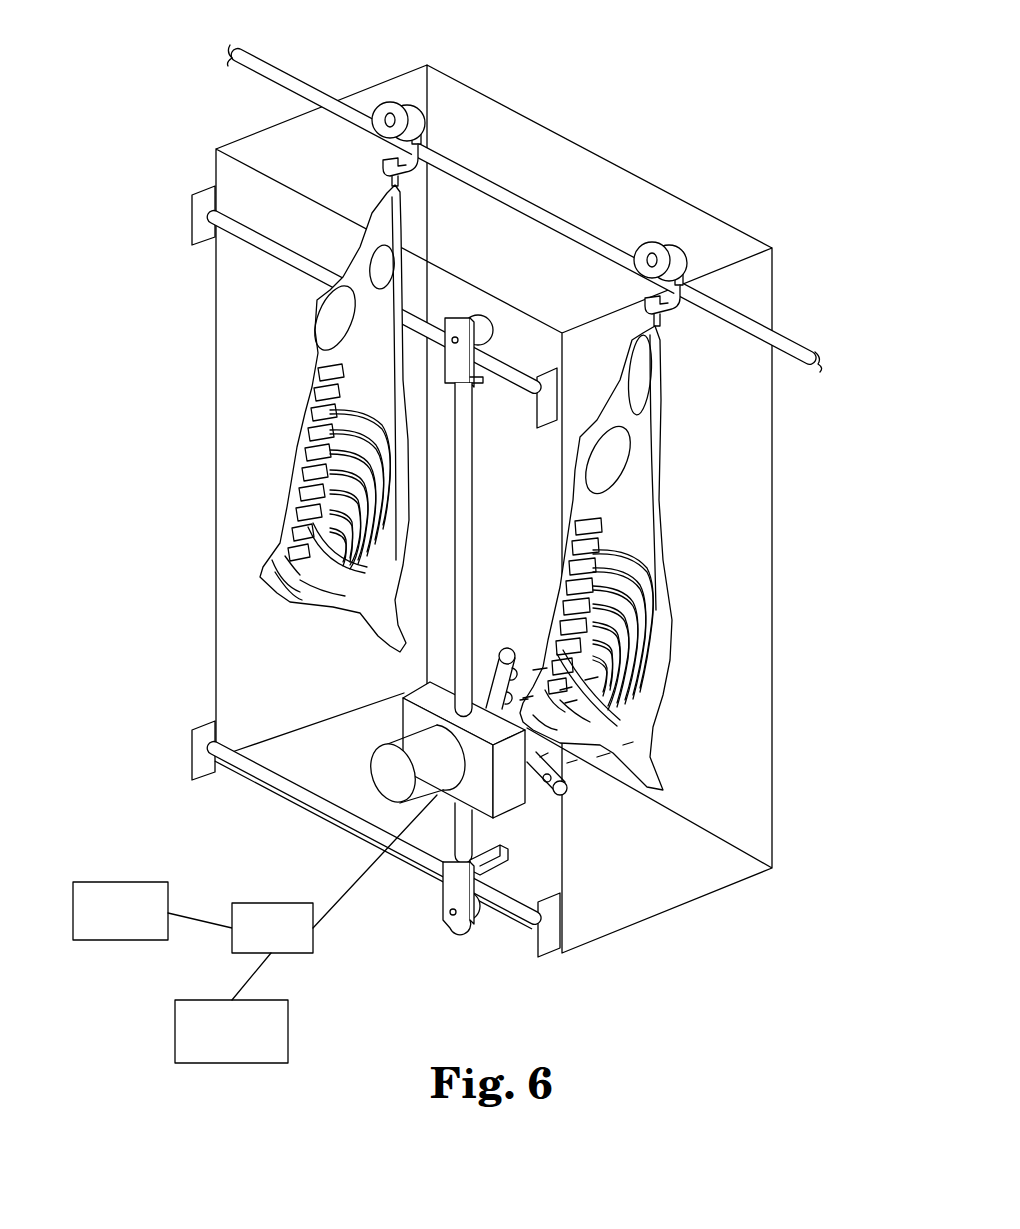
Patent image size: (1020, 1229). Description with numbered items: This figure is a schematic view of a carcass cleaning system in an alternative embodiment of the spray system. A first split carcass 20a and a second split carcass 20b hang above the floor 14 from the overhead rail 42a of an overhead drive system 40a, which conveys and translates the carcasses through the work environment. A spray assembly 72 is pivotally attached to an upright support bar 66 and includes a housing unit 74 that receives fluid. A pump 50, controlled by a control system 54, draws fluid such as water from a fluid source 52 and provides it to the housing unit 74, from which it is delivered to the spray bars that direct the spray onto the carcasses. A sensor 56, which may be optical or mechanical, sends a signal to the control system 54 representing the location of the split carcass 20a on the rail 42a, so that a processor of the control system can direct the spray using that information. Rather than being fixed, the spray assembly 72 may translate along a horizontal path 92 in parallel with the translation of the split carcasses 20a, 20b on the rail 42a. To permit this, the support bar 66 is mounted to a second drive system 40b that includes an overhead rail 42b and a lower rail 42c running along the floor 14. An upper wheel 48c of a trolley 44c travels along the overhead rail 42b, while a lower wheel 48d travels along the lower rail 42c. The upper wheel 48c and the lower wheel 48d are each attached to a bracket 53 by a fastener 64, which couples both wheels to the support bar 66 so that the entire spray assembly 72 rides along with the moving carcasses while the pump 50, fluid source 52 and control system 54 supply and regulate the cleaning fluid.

The floor 14 is at (646, 895).
The split carcass 20a is at (675, 510).
The split carcass 20b is at (428, 448).
The overhead drive system 40a is at (351, 76).
The drive system 40b is at (260, 276).
The overhead rail 42a is at (258, 58).
The overhead rail 42b is at (245, 232).
The lower rail 42c is at (265, 788).
The trolley 44c is at (453, 300).
The upper wheel 48c is at (485, 312).
The lower wheel 48d is at (471, 931).
The pump 50 is at (292, 954).
The fluid source 52 is at (120, 941).
The bracket 53 is at (483, 357).
The control system 54 is at (226, 1064).
The sensor 56 is at (505, 847).
The fastener 64 is at (447, 912).
The support bar 66 is at (477, 474).
The spray assembly 72 is at (353, 767).
The housing unit 74 is at (513, 821).
The horizontal path 92 is at (563, 200).